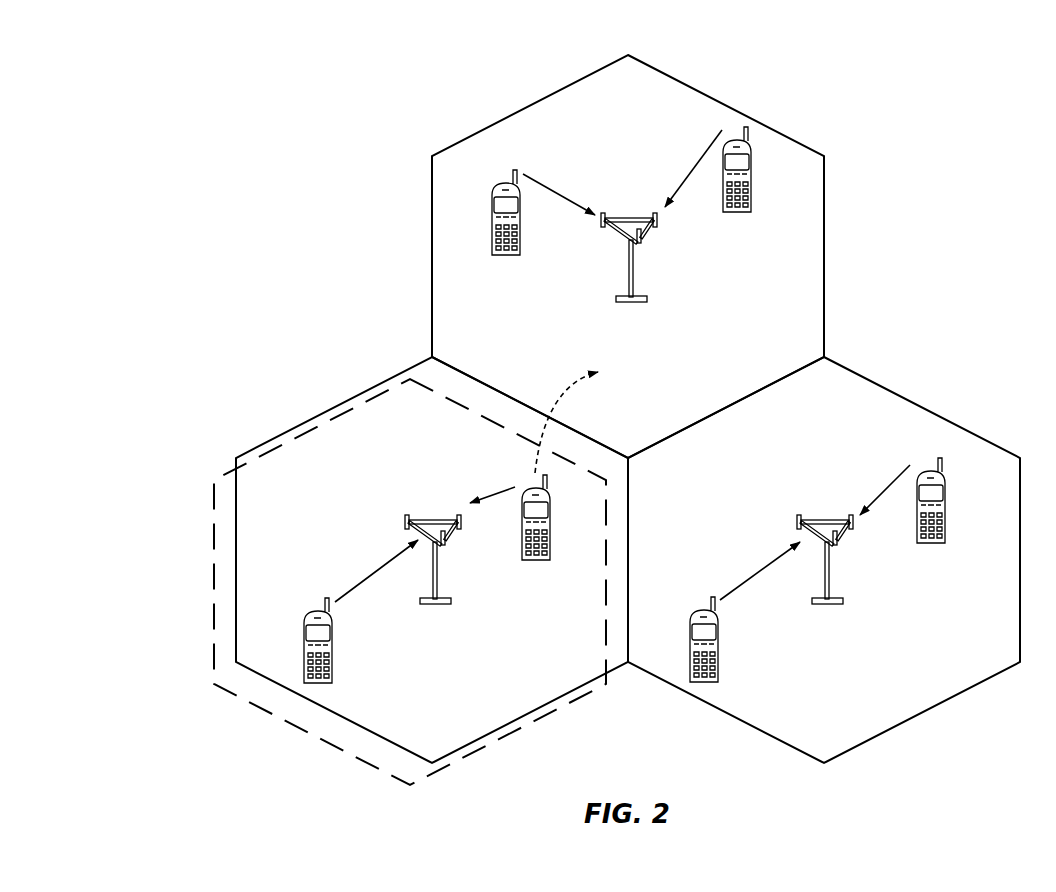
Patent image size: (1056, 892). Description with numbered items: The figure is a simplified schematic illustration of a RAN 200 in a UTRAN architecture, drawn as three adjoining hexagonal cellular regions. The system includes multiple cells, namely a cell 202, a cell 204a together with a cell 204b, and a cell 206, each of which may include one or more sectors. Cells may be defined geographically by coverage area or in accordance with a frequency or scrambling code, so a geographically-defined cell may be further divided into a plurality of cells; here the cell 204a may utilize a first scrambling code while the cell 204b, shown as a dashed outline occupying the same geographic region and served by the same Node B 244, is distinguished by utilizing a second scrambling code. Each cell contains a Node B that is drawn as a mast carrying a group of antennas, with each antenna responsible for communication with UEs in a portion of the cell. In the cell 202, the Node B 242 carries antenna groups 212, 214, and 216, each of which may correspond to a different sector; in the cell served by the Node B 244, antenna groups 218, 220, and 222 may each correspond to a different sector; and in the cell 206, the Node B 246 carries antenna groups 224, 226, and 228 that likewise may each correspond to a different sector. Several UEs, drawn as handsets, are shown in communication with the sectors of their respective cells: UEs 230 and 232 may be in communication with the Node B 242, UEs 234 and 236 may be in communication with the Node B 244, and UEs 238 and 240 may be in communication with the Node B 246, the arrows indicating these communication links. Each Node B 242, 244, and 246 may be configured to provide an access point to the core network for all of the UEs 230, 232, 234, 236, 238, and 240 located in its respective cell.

The RAN 200 is at (970, 58).
The cell 202 is at (922, 406).
The cell 204a is at (312, 419).
The cell 204b is at (212, 498).
The cell 206 is at (710, 96).
The antenna group 212 is at (798, 520).
The antenna group 214 is at (837, 547).
The antenna group 216 is at (852, 530).
The antenna group 218 is at (445, 547).
The antenna group 220 is at (460, 530).
The antenna group 222 is at (406, 520).
The antenna group 224 is at (602, 229).
The antenna group 226 is at (641, 245).
The antenna group 228 is at (656, 229).
The UE 230 is at (945, 494).
The UE 232 is at (690, 634).
The UE 234 is at (550, 512).
The UE 236 is at (305, 633).
The UE 238 is at (505, 257).
The UE 240 is at (742, 214).
The Node B 242 is at (824, 539).
The Node B 244 is at (431, 539).
The Node B 246 is at (628, 238).